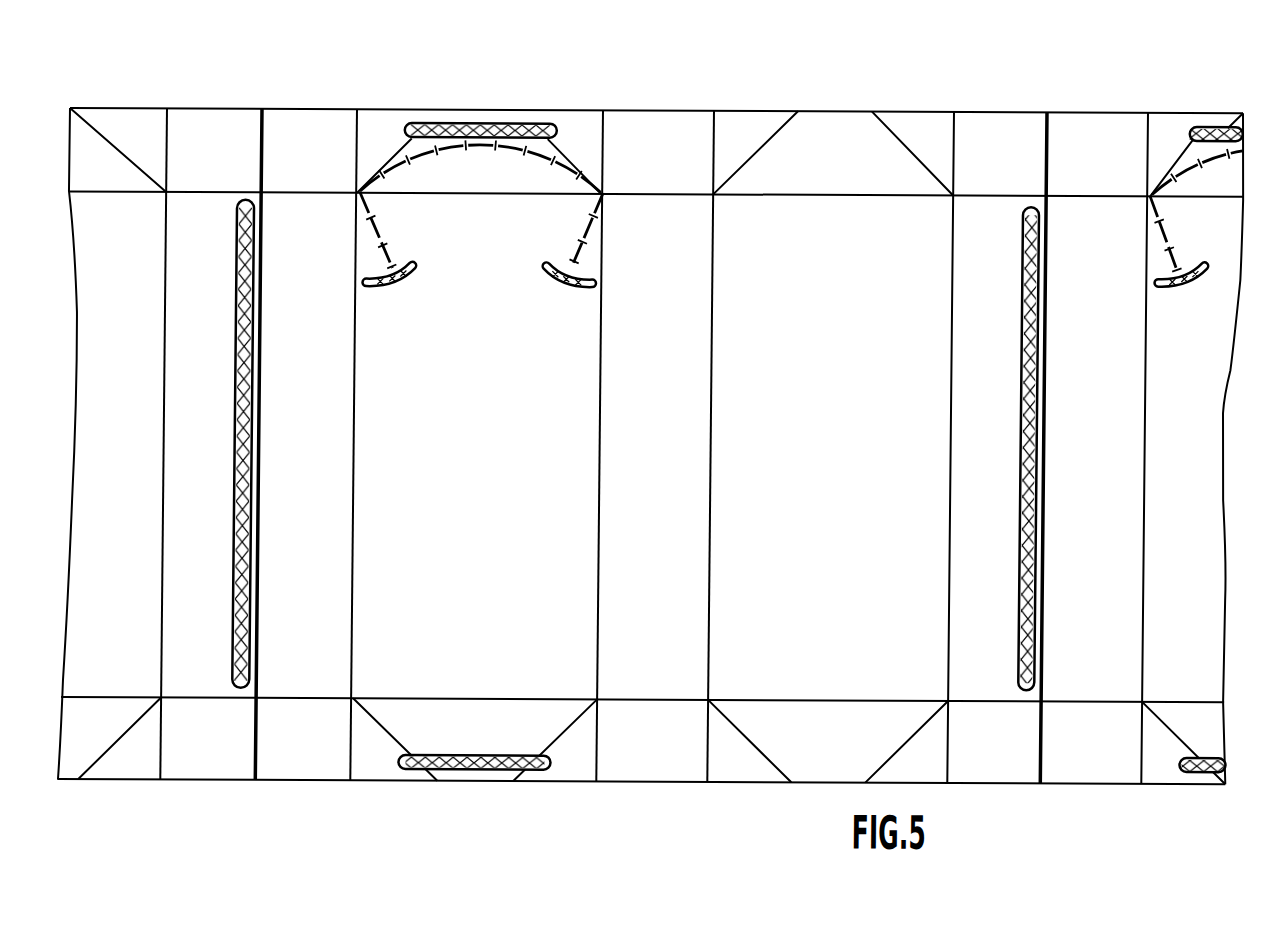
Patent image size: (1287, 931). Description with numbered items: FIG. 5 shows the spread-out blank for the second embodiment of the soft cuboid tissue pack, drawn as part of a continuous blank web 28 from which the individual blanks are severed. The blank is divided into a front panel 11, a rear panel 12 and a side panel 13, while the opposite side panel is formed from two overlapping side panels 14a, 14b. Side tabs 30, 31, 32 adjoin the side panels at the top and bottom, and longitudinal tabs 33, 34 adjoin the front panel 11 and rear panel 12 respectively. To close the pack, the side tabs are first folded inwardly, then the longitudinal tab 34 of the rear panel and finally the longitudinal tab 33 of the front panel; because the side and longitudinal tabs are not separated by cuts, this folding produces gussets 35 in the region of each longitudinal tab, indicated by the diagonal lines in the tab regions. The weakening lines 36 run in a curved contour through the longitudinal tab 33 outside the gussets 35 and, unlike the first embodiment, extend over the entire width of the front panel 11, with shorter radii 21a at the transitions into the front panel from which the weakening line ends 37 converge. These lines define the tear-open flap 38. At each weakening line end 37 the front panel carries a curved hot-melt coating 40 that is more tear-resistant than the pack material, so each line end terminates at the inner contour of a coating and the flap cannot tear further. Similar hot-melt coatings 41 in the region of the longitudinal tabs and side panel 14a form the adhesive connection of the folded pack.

The front panel 11 is at (463, 471).
The rear panel 12 is at (831, 469).
The side panel 13 is at (634, 470).
The side panel 14a is at (1000, 469).
The side panel 14b is at (328, 472).
The shorter radii 21a is at (361, 191).
The continuous blank web 28 is at (1234, 410).
The side tab 30 is at (667, 127).
The side tab 31 is at (328, 139).
The side tab 32 is at (1002, 126).
The longitudinal tab 33 is at (497, 118).
The longitudinal tab 34 is at (837, 140).
The gusset 35 is at (927, 126).
The weakening lines 36 is at (557, 145).
The weakening line ends 37 is at (384, 267).
The tear-open flap 38 is at (474, 176).
The coatings 40 is at (385, 289).
The coatings 41 is at (485, 125).